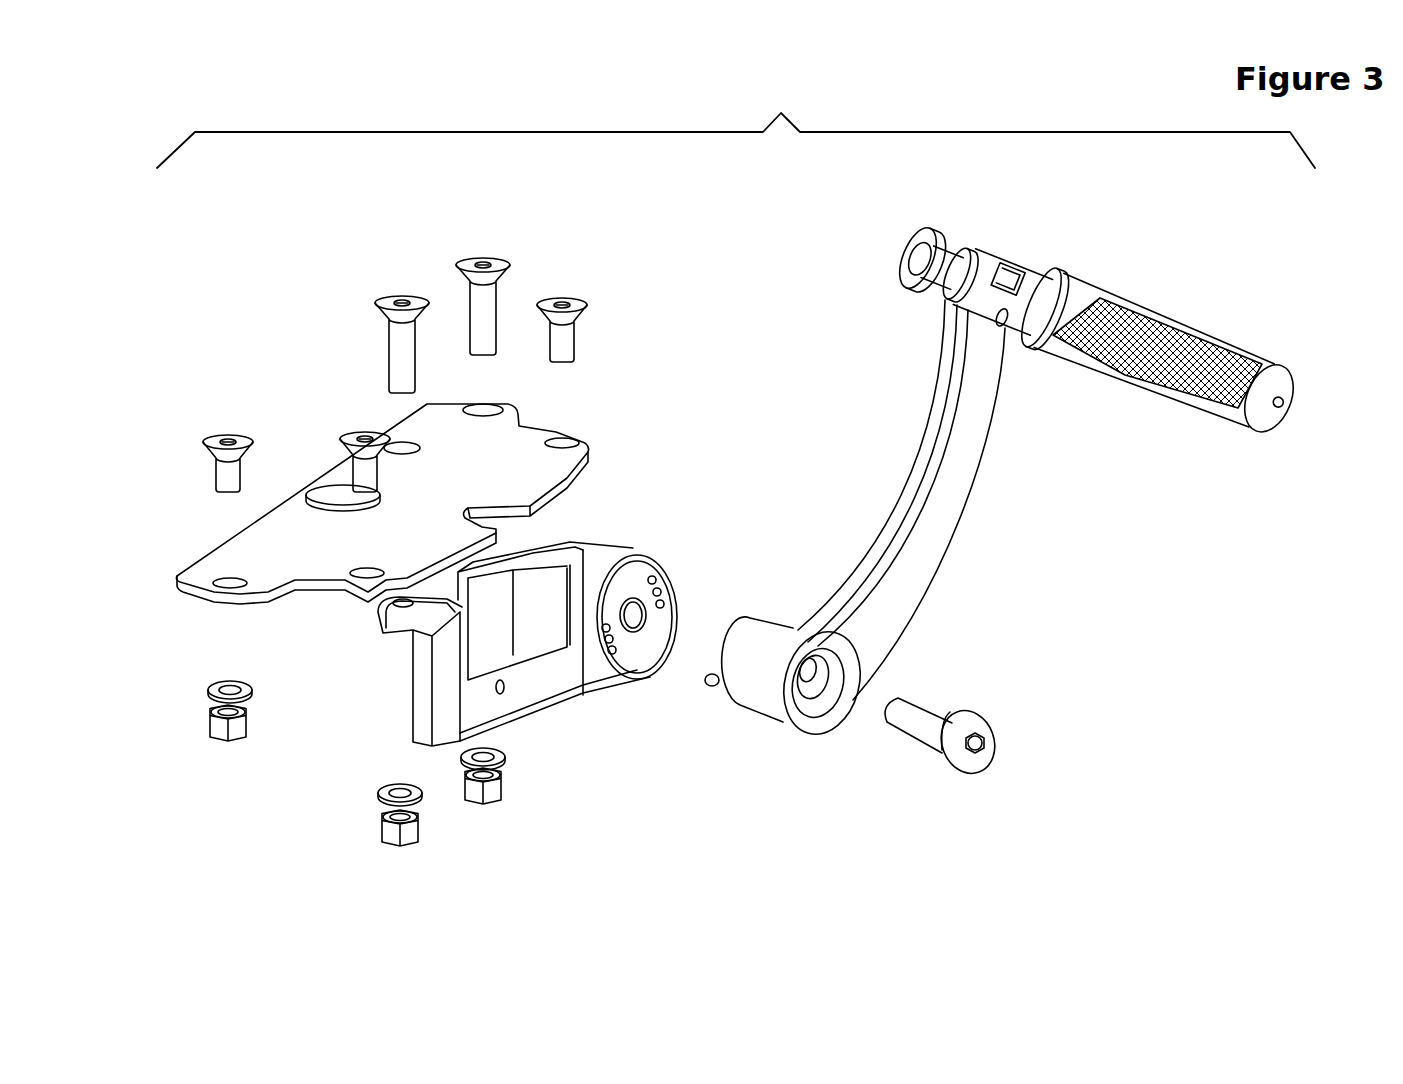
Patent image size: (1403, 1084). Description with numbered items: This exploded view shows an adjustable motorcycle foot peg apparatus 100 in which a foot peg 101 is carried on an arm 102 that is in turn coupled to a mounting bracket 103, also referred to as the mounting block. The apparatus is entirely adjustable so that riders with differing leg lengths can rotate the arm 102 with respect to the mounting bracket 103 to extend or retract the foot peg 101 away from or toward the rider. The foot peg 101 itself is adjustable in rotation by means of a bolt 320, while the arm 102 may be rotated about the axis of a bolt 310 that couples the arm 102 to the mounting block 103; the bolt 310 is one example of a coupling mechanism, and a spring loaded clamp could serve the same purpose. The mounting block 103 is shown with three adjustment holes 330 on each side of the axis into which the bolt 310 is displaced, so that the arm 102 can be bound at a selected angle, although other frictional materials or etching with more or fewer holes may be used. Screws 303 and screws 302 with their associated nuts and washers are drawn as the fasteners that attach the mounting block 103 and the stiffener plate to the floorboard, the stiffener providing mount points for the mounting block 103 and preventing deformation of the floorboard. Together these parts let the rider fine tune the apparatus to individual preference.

The pedal assembly 100 is at (736, 129).
The foot peg 101 is at (1222, 437).
The arm 102 is at (980, 520).
The mounting bracket 103 is at (592, 703).
The screws with nuts and washers 302 is at (405, 830).
The screws 303 is at (485, 315).
The bolt 310 is at (1002, 723).
The bolt 320 is at (900, 222).
The adjustment holes 330 is at (618, 640).